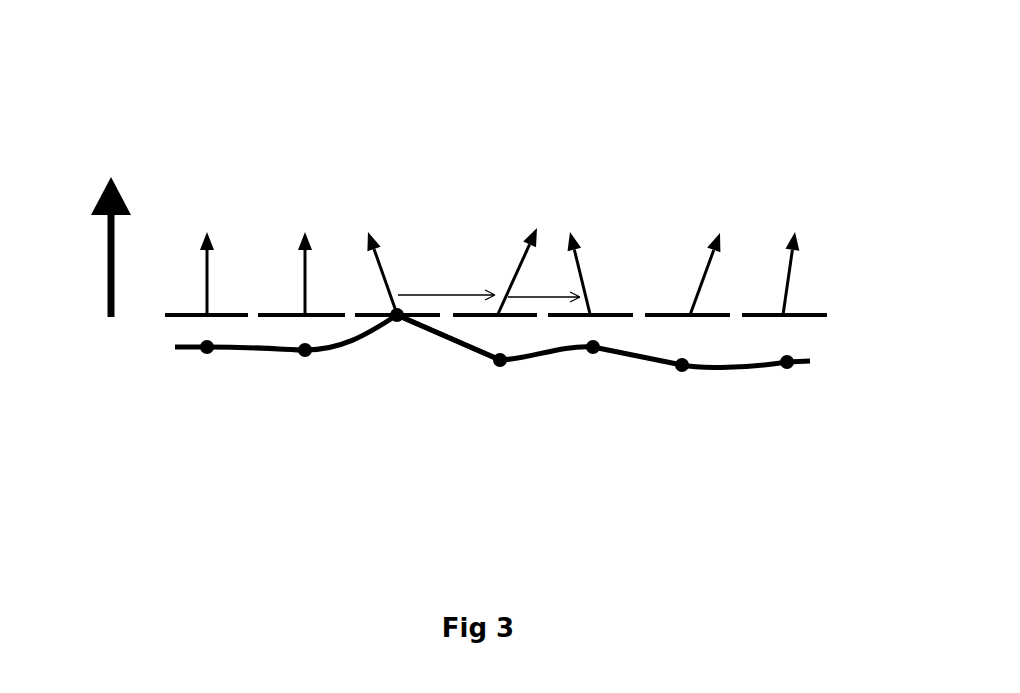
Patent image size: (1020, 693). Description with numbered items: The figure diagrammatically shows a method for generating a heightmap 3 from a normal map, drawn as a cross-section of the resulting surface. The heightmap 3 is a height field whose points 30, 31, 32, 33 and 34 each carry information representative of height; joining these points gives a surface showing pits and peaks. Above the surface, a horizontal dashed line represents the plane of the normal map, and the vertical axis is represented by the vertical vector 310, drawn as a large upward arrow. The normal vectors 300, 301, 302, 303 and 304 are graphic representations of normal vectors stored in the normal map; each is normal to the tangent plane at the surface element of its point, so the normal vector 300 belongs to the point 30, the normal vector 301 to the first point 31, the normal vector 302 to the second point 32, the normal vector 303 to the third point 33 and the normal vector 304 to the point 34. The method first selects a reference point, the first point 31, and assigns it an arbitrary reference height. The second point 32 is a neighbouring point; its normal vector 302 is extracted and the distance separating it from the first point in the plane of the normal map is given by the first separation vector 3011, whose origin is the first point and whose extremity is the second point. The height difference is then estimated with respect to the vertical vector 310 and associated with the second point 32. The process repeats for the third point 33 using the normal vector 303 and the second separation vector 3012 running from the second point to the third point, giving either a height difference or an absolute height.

The heightmap 3 is at (182, 350).
The point of the heightmap 30 is at (300, 353).
The first point P1 of the heightmap 31 is at (391, 327).
The second point P2 of the heightmap 32 is at (502, 364).
The third point P3 of the heightmap 33 is at (595, 352).
The point of the heightmap 34 is at (684, 369).
The normal vector 300 is at (300, 266).
The normal vector 301 is at (383, 260).
The normal vector 302 is at (518, 250).
The normal vector 303 is at (587, 263).
The normal vector 304 is at (720, 233).
The vector v 310 is at (123, 197).
The vector δ 3011 is at (443, 298).
The vector δ 3012 is at (553, 312).